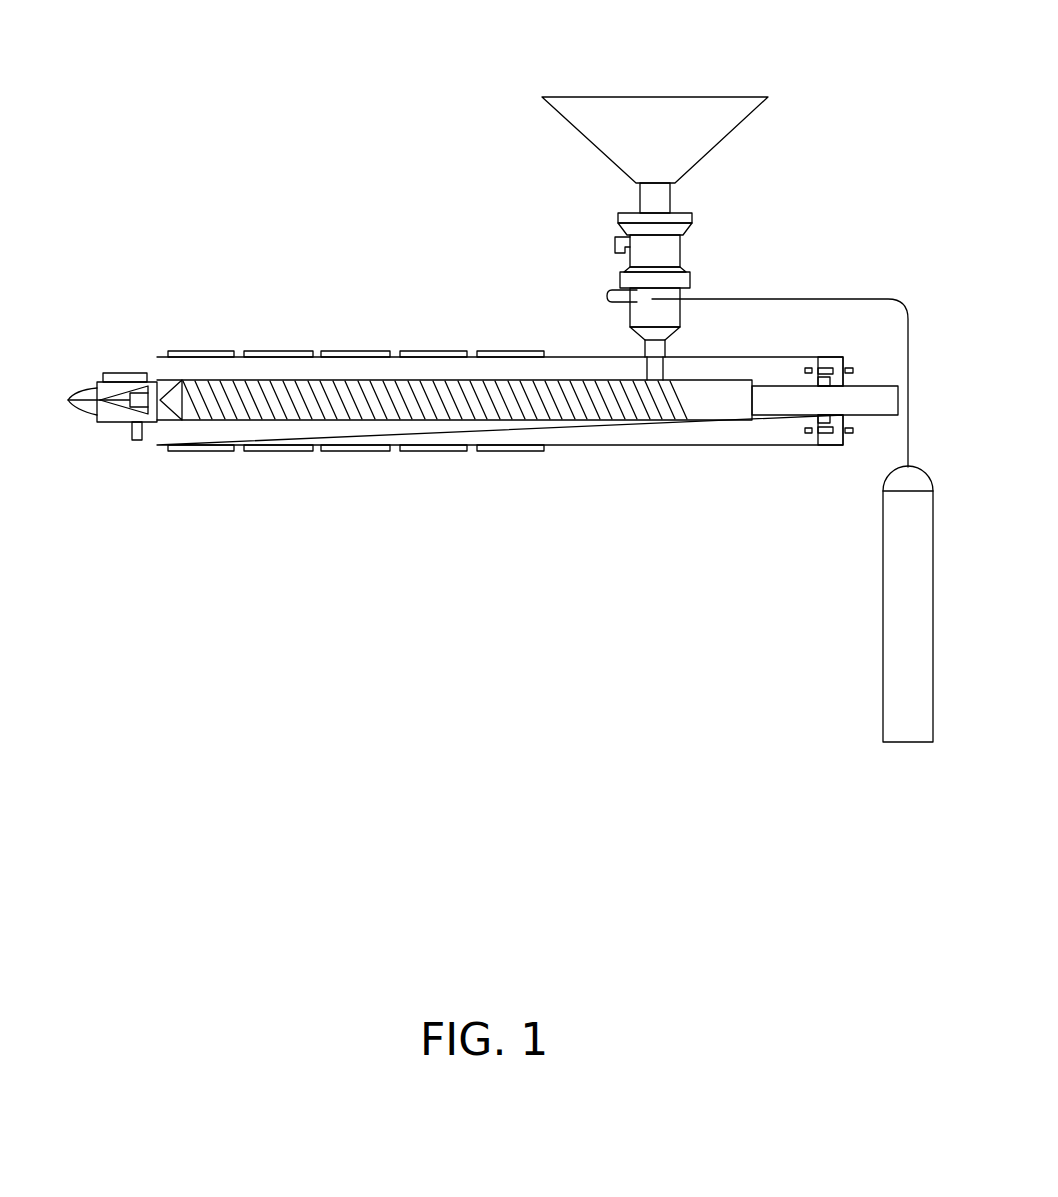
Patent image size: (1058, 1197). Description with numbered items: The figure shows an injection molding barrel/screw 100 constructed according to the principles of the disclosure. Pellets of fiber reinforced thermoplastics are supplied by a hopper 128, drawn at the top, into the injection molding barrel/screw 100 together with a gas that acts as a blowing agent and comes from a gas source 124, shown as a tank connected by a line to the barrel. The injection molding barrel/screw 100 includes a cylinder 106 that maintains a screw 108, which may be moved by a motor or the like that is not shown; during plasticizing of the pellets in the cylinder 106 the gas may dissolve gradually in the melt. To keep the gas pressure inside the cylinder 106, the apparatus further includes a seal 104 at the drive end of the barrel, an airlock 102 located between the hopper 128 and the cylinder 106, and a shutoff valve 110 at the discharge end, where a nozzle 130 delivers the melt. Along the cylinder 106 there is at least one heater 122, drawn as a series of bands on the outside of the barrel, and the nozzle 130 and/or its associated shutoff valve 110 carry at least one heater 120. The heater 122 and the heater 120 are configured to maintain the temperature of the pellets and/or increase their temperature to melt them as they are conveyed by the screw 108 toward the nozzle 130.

The injection molding barrel/screw 100 is at (307, 168).
The airlock 102 is at (663, 247).
The seal 104 is at (852, 375).
The cylinder 106 is at (622, 442).
The screw 108 is at (365, 420).
The shutoff valve 110 is at (103, 428).
The heater 120 is at (115, 373).
The heater 122 is at (190, 350).
The gas source 124 is at (900, 585).
The hopper 128 is at (723, 120).
The nozzle 130 is at (76, 370).